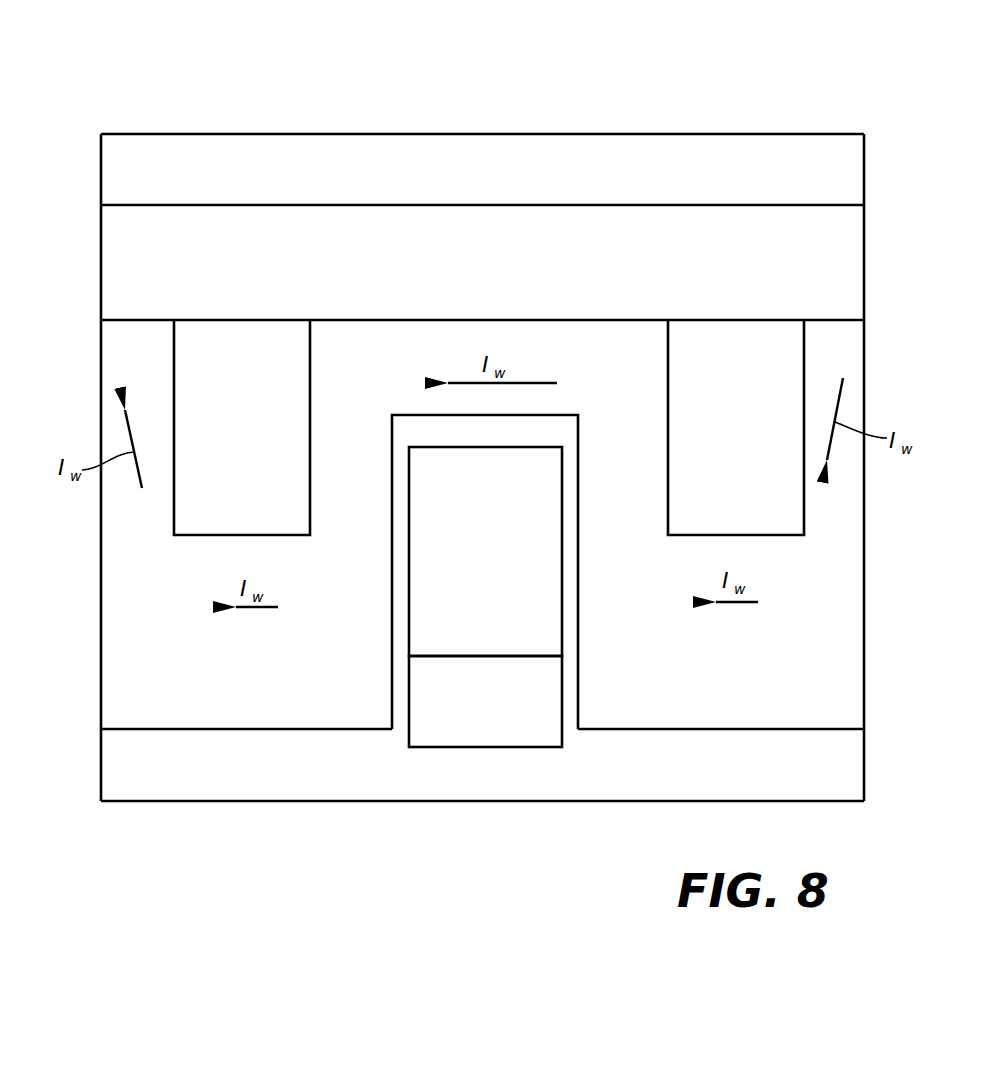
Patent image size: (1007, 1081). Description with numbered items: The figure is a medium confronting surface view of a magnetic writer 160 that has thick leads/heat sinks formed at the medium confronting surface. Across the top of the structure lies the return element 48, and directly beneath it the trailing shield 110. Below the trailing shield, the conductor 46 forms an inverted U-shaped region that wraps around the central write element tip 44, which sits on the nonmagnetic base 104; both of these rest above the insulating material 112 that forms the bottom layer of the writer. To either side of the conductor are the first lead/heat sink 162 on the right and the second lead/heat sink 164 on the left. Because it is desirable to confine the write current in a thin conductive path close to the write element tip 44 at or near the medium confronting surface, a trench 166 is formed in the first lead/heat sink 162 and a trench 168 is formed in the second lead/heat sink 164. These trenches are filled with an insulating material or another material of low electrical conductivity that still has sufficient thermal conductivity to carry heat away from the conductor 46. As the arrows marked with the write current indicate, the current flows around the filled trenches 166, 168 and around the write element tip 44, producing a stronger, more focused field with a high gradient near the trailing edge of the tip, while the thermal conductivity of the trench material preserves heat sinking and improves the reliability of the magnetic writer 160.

The magnetic writer 160 is at (767, 105).
The return element 48 is at (462, 182).
The trailing shield 110 is at (455, 267).
The conductor 46 is at (569, 347).
The trench 168 is at (218, 427).
The trench 166 is at (712, 428).
The write element tip 44 is at (466, 561).
The nonmagnetic base 104 is at (460, 710).
The second lead/heat sink 164 is at (218, 685).
The first lead/heat sink 162 is at (712, 683).
The insulating material 112 is at (402, 785).